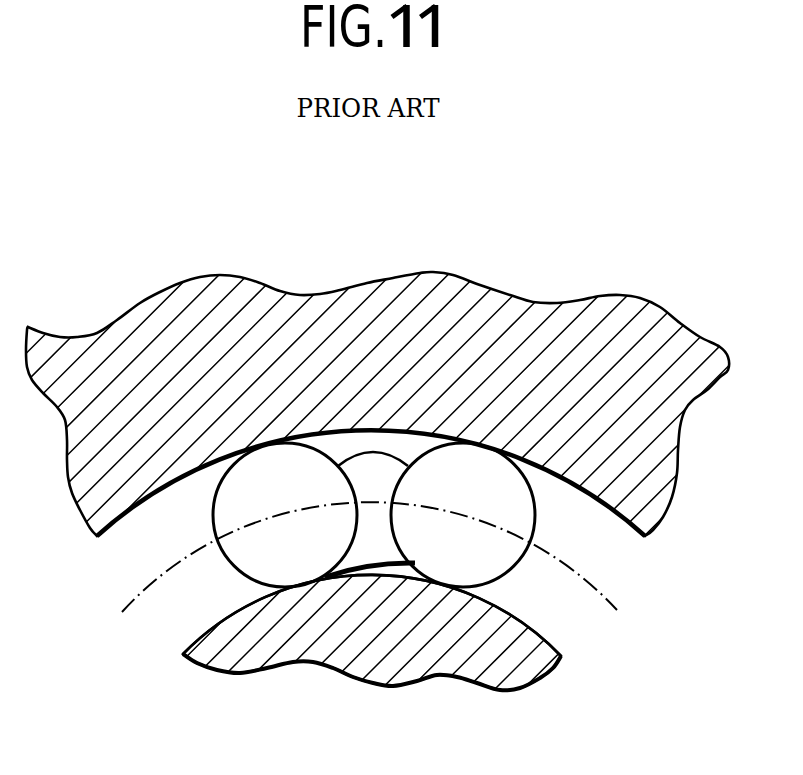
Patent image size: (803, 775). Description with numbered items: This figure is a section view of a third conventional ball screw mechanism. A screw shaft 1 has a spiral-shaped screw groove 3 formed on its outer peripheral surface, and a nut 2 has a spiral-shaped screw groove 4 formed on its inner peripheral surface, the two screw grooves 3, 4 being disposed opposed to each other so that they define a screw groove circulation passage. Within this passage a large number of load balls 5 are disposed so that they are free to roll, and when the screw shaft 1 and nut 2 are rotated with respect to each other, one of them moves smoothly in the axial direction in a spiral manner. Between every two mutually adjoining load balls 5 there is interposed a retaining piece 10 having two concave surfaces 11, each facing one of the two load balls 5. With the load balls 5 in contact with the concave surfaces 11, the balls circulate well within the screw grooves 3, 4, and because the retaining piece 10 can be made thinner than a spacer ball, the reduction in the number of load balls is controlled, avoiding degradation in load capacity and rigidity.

The screw shaft 1 is at (467, 673).
The nut 2 is at (515, 313).
The screw groove 3 is at (543, 636).
The screw groove 4 is at (620, 513).
The load ball 5 is at (240, 555).
The retaining piece 10 is at (373, 565).
The concave surface 11 is at (340, 482).